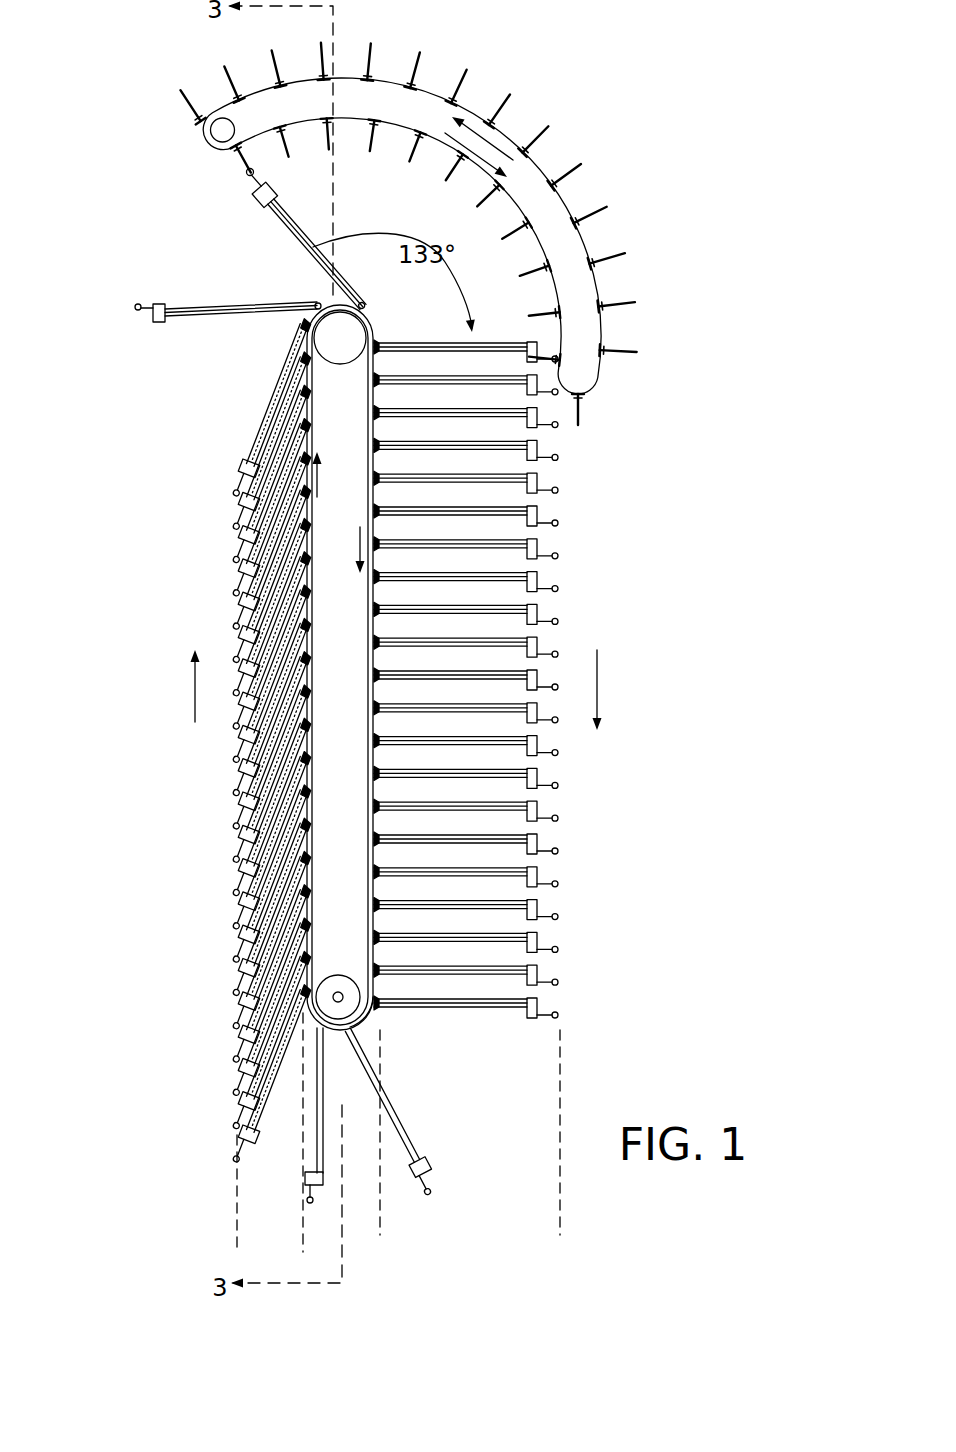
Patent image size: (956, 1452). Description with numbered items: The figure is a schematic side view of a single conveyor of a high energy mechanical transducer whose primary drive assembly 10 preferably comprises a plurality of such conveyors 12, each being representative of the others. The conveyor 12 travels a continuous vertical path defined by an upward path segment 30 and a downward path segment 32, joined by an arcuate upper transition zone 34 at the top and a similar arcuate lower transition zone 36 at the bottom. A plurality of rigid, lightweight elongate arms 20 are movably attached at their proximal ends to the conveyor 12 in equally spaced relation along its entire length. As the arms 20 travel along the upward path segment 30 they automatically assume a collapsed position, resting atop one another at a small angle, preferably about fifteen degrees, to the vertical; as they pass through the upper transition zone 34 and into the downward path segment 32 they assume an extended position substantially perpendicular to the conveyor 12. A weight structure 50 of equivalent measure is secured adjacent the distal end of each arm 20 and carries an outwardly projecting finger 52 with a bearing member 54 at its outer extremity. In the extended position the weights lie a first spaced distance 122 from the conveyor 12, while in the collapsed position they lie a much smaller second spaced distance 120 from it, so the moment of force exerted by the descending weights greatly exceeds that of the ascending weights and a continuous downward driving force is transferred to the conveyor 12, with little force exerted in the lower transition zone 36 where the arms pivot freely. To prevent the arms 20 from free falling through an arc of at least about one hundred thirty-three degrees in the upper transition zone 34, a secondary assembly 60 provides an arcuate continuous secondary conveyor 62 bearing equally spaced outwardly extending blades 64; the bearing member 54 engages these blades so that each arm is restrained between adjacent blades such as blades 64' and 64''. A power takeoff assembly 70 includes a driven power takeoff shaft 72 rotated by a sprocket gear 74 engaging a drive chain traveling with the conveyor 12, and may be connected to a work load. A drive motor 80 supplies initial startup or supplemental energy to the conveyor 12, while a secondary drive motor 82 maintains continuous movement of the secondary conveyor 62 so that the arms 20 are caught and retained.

The primary drive assembly 10 is at (132, 425).
The conveyor 12 is at (313, 723).
The elongate arms 20 is at (240, 889).
The upward path segment 30 is at (320, 481).
The downward path segment 32 is at (358, 546).
The upper transition zone 34 is at (382, 322).
The lower transition zone 36 is at (378, 1028).
The weight structure 50 is at (268, 200).
The finger 52 is at (262, 178).
The bearing member 54 is at (250, 174).
The secondary assembly 60 is at (653, 159).
The secondary conveyor 62 is at (532, 160).
The blades 64 is at (406, 228).
The blade 64' is at (207, 170).
The blade 64'' is at (304, 154).
The power takeoff assembly 70 is at (354, 968).
The power takeoff shaft 72 is at (337, 996).
The sprocket gear 74 is at (320, 1031).
The drive motor 80 is at (320, 306).
The secondary drive motor 82 is at (197, 146).
The second spaced distance 120 is at (205, 1242).
The first spaced distance 122 is at (380, 1223).